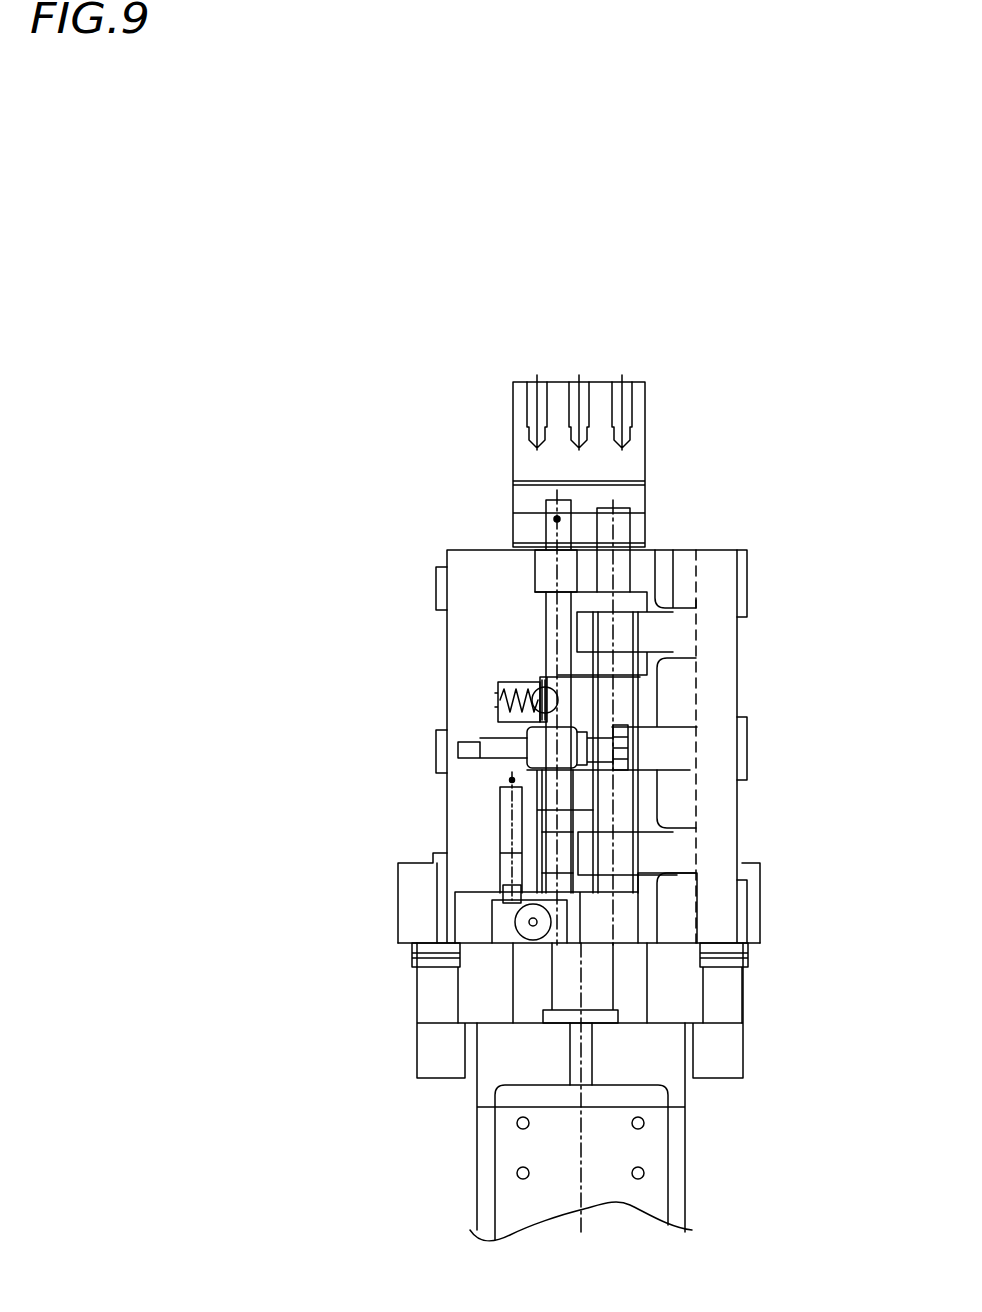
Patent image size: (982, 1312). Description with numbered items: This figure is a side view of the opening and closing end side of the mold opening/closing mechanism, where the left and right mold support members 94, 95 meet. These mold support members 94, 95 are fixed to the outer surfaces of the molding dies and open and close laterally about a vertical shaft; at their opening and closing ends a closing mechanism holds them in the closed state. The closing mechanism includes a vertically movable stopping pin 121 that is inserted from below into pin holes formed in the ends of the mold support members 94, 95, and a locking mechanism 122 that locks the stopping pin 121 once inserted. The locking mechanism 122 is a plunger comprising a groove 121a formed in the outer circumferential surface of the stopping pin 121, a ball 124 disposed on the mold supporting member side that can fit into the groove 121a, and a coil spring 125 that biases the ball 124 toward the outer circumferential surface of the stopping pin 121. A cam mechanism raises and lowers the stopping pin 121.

The mold support member 94 is at (718, 672).
The mold support member 95 is at (453, 678).
The stopping pin 121 is at (553, 542).
The groove 121a is at (557, 677).
The locking mechanism 122 is at (482, 660).
The ball 124 is at (500, 712).
The coil spring 125 is at (497, 700).